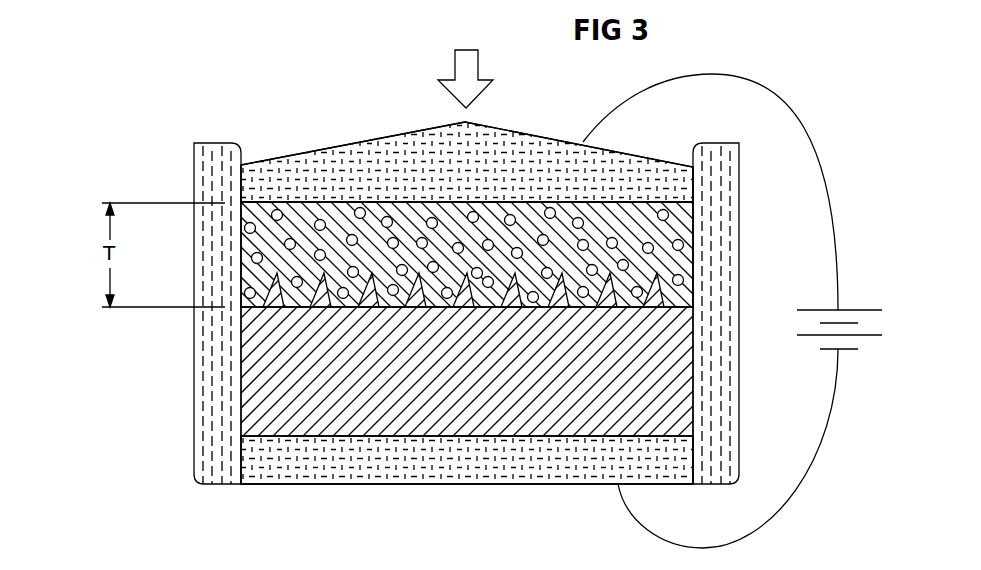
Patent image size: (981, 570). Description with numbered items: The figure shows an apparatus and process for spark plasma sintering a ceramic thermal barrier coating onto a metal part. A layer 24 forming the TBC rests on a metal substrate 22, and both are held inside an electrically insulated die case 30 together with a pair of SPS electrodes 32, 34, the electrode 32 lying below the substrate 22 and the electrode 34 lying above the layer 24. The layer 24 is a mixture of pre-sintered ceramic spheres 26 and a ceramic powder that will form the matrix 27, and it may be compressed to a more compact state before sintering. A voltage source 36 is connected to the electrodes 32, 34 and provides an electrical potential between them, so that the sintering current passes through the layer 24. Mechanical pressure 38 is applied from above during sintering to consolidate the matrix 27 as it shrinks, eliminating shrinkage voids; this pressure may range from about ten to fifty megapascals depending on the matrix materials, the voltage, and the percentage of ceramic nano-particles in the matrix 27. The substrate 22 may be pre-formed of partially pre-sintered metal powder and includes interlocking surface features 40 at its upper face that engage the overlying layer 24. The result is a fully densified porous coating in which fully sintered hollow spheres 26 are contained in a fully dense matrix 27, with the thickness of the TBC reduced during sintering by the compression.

The metal substrate 22 is at (263, 355).
The TBC layer 24 is at (263, 240).
The pre-sintered ceramic spheres 26 is at (683, 247).
The matrix 27 is at (680, 222).
The electrically insulated die case 30 is at (213, 410).
The SPS electrode 32 is at (386, 480).
The SPS electrode 34 is at (338, 153).
The voltage source 36 is at (810, 338).
The mechanical pressure 38 is at (486, 94).
The interlocking surface features 40 is at (255, 291).